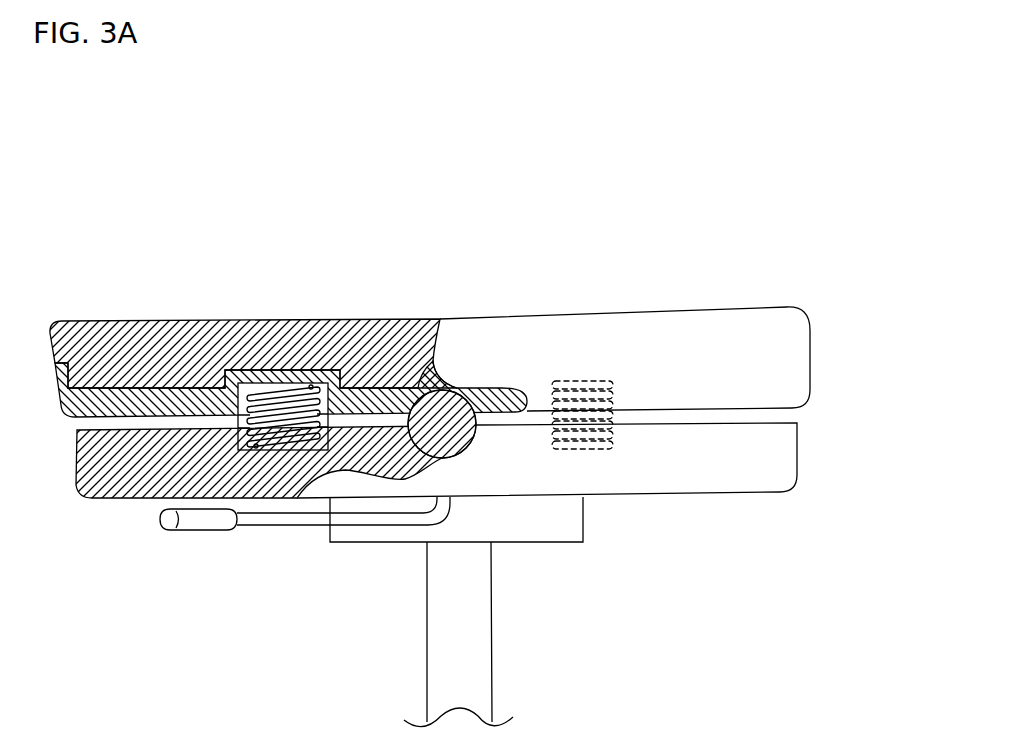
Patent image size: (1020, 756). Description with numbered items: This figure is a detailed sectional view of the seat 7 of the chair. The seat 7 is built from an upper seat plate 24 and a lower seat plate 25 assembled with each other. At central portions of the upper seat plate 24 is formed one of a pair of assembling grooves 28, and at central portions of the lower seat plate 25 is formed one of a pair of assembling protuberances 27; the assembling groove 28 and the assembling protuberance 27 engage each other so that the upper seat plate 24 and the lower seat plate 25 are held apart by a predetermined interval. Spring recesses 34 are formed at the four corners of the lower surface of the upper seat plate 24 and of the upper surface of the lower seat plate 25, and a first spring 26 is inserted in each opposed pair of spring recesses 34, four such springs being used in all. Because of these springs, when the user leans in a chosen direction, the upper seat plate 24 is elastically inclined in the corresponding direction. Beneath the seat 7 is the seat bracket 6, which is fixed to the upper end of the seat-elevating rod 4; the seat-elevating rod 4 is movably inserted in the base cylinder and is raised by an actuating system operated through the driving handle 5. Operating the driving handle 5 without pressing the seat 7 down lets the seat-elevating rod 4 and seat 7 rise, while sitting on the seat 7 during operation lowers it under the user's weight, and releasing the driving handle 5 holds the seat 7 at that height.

The seat 7 is at (228, 318).
The assembling groove 28 is at (433, 363).
The first spring 26 is at (585, 380).
The assembling protuberance 27 is at (466, 450).
The upper seat plate 24 is at (800, 367).
The lower seat plate 25 is at (792, 457).
The spring recess 34 is at (245, 432).
The driving handle 5 is at (210, 531).
The seat bracket 6 is at (560, 533).
The seat-elevating rod 4 is at (432, 601).